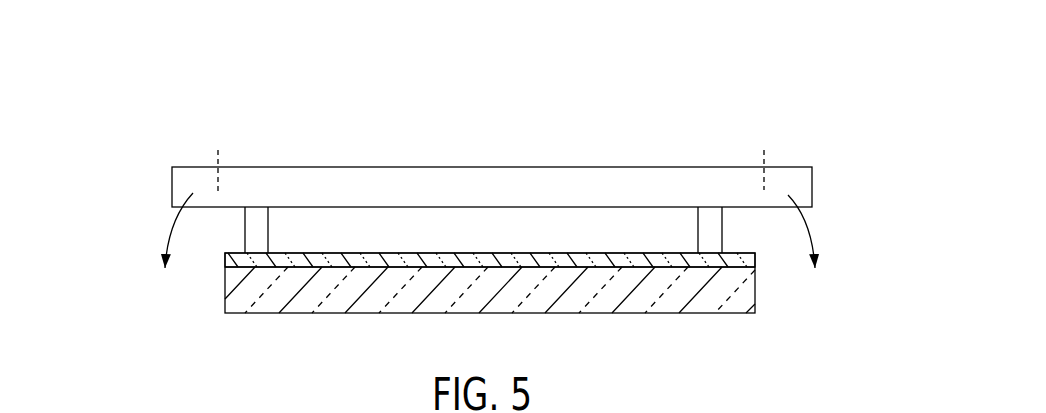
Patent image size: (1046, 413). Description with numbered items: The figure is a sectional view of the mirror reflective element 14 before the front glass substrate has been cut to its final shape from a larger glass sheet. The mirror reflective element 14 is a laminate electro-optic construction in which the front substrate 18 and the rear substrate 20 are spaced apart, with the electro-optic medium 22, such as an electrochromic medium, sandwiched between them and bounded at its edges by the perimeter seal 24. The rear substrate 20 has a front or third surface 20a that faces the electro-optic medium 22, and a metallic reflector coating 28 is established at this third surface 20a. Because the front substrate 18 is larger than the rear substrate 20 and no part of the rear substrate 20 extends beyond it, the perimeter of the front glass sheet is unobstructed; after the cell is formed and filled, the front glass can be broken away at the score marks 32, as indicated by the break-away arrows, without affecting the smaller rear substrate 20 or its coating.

The mirror reflective element 14 is at (140, 117).
The front substrate 18 is at (802, 175).
The rear substrate 20 is at (243, 303).
The third surface 20a is at (313, 267).
The electro-optic medium 22 is at (442, 218).
The perimeter seal 24 is at (262, 220).
The metallic reflector coating 28 is at (713, 262).
The score marks 32 is at (218, 143).